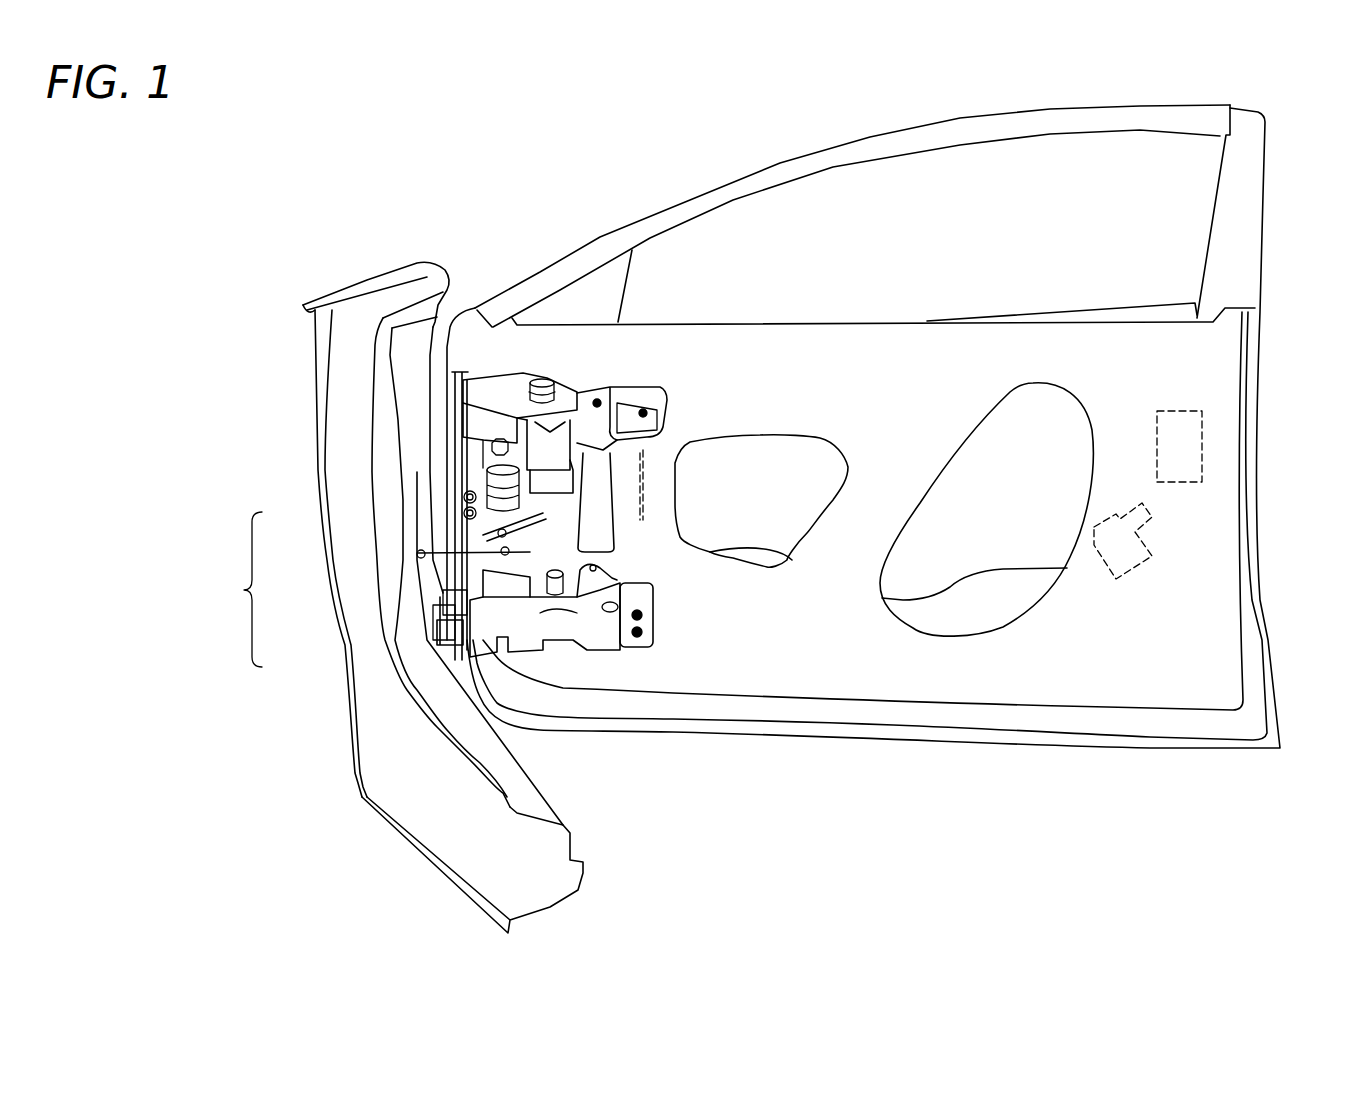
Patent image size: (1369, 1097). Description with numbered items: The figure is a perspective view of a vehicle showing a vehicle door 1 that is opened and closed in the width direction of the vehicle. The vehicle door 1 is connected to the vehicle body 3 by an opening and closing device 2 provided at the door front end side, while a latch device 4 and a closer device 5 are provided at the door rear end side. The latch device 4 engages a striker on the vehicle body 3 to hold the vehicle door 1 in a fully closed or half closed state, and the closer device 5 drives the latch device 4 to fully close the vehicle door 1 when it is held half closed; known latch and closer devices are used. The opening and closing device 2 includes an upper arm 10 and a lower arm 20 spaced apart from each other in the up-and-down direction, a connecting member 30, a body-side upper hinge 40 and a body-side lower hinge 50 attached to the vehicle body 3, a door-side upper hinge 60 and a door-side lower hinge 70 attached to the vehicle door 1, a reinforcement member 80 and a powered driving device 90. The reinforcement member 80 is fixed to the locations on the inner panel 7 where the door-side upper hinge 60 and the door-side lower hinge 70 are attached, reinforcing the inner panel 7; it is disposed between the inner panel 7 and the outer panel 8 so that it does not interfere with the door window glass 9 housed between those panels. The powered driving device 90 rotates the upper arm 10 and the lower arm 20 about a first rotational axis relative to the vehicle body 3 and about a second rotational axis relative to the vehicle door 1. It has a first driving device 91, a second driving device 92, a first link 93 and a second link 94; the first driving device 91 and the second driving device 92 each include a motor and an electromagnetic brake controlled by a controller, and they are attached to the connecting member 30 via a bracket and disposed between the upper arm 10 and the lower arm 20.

The vehicle door 1 is at (1266, 343).
The opening and closing device 2 is at (419, 460).
The vehicle body 3 is at (306, 277).
The latch device 4 is at (1202, 452).
The closer device 5 is at (1142, 542).
The inner panel 7 is at (903, 702).
The outer panel 8 is at (990, 616).
The door window glass 9 is at (1096, 305).
The upper arm 10 is at (500, 366).
The lower arm 20 is at (542, 654).
The connecting member 30 is at (452, 434).
The body-side upper hinge 40 is at (417, 373).
The body-side lower hinge 50 is at (437, 641).
The door-side upper hinge 60 is at (600, 387).
The door-side lower hinge 70 is at (627, 658).
The reinforcement member 80 is at (647, 522).
The powered driving device 90 is at (236, 589).
The first driving device 91 is at (452, 508).
The second driving device 92 is at (447, 610).
The first link 93 is at (418, 553).
The second link 94 is at (440, 588).